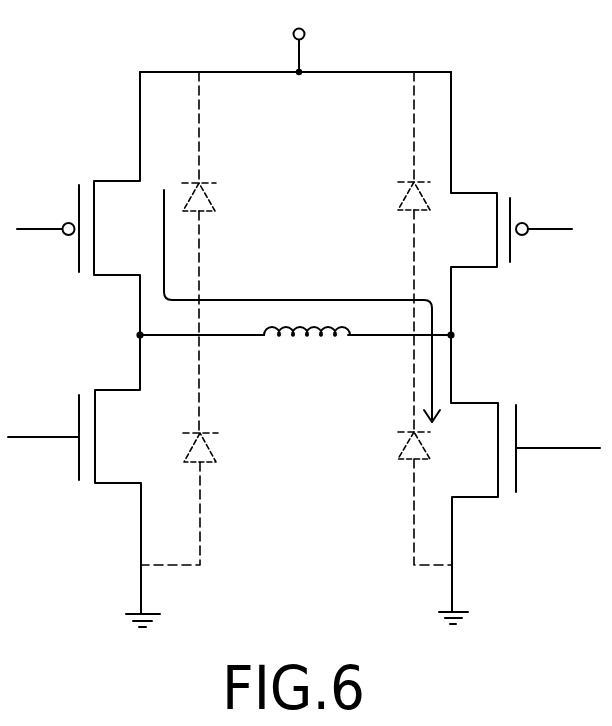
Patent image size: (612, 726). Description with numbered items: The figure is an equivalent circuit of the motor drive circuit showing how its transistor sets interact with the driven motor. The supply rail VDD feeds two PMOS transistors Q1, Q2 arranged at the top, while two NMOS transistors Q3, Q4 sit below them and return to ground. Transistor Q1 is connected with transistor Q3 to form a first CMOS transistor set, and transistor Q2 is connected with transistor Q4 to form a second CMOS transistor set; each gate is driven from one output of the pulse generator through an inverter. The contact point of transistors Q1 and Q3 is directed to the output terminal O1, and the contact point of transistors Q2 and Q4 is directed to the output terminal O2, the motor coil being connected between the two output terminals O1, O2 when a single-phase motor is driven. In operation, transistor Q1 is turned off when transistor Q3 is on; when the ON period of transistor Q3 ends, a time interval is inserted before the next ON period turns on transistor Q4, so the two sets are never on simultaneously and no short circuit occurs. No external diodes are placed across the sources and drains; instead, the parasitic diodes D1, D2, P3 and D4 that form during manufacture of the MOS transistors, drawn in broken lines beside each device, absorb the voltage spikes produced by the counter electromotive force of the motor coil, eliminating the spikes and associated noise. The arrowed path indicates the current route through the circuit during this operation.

The supply voltage terminal VDD is at (317, 40).
The PMOS transistor Q1 is at (78, 203).
The PMOS transistor Q2 is at (511, 203).
The NMOS transistor Q3 is at (84, 481).
The NMOS transistor Q4 is at (519, 479).
The parasitic diode D1 is at (211, 252).
The parasitic diode D2 is at (396, 252).
The body diode of transistor Q3 P3 is at (195, 499).
The parasitic diode D4 is at (409, 498).
The output terminal O1 is at (183, 337).
The output terminal O2 is at (418, 337).